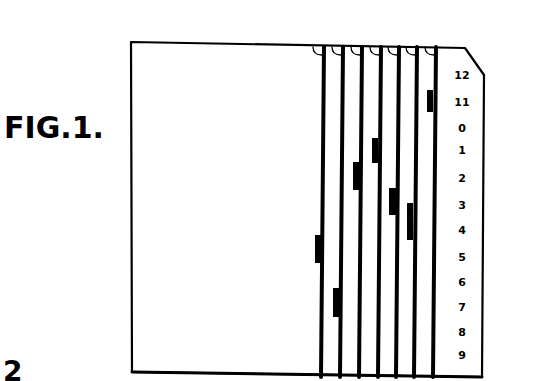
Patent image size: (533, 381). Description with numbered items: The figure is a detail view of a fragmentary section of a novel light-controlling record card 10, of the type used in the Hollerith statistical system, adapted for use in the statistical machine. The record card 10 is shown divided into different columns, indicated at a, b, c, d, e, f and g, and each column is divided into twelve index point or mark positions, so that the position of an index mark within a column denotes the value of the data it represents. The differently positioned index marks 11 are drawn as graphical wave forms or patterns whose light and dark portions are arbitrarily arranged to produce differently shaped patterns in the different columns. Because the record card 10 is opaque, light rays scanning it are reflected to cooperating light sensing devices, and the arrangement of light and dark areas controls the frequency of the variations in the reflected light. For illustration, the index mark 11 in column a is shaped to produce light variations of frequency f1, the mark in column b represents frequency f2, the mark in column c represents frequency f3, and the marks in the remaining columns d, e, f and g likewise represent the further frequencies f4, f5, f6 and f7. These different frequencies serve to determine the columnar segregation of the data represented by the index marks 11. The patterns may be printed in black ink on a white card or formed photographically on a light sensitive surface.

The record card 10 is at (148, 78).
The index marks 11 is at (315, 243).
The column a is at (316, 204).
The column b is at (337, 204).
The column c is at (355, 204).
The column d is at (375, 204).
The column e is at (393, 204).
The column f is at (412, 204).
The column g is at (432, 204).
The frequency f1 is at (314, 255).
The frequency f2 is at (331, 306).
The frequency f3 is at (355, 173).
The frequency f4 is at (372, 150).
The frequency f5 is at (389, 205).
The frequency f6 is at (407, 235).
The frequency f7 is at (429, 112).